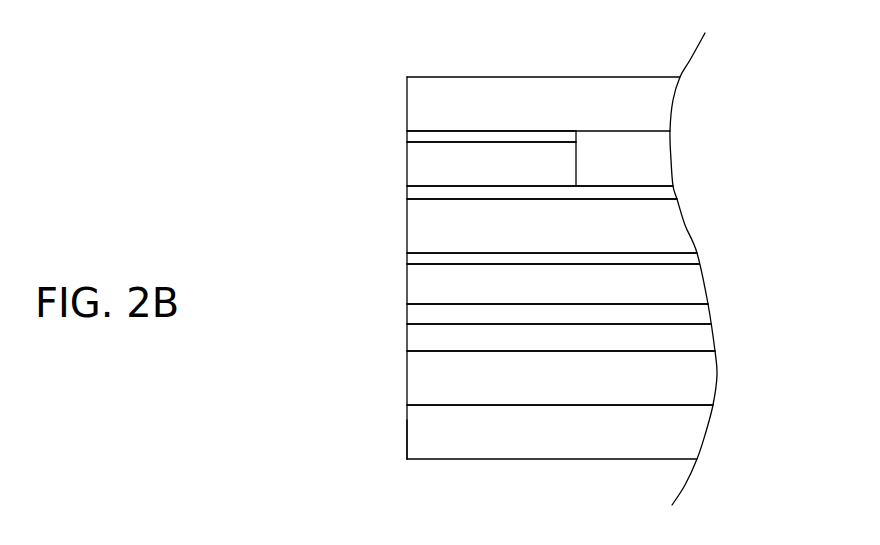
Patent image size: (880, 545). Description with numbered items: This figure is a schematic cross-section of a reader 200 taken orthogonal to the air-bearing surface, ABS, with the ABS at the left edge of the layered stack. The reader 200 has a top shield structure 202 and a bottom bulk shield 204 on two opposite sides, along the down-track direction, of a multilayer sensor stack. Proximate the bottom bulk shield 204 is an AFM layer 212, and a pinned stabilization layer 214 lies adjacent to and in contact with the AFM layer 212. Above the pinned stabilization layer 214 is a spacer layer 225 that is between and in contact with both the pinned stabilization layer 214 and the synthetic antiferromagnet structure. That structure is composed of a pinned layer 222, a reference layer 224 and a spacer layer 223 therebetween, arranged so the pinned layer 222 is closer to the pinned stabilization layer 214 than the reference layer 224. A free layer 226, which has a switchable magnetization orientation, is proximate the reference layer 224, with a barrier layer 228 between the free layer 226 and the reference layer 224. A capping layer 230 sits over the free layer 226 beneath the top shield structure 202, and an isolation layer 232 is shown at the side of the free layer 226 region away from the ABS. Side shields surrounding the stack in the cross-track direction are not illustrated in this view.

The reader 200 is at (153, 109).
The top shield structure 202 is at (407, 88).
The bottom bulk shield 204 is at (407, 432).
The AFM layer 212 is at (407, 379).
The pinned stabilization layer 214 is at (407, 343).
The pinned layer 222 is at (407, 283).
The spacer layer 223 is at (407, 259).
The reference layer 224 is at (407, 218).
The spacer layer 225 is at (407, 316).
The free layer 226 is at (407, 175).
The barrier layer 228 is at (407, 192).
The capping layer 230 is at (407, 138).
The isolation layer 232 is at (672, 162).
The air-bearing surface ABS is at (400, 448).